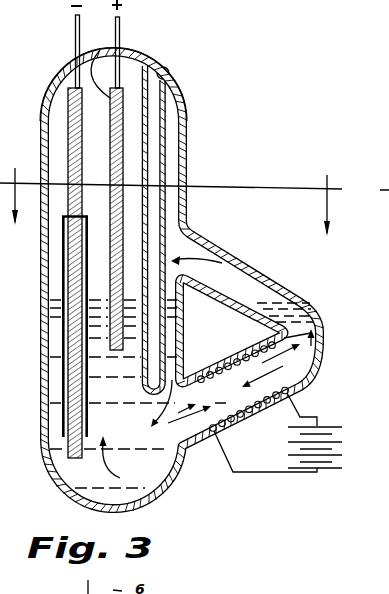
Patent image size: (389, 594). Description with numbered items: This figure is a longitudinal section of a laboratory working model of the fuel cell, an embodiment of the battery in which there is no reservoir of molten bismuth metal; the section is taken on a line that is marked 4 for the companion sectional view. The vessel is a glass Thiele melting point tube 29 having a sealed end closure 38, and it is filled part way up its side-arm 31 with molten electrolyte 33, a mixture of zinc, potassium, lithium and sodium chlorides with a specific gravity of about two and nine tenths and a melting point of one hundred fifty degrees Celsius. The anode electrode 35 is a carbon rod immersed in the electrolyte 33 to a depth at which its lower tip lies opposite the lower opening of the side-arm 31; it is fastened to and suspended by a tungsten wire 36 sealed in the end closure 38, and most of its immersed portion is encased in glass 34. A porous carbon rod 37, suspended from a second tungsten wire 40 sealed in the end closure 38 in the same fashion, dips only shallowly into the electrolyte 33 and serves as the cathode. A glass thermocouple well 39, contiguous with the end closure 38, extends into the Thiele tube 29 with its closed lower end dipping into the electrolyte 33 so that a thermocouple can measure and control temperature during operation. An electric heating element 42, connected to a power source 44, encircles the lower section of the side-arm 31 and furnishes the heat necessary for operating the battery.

The section line 4- 4 is at (194, 210).
The glass Thiele melting point tube 29 is at (177, 87).
The side-arm 31 is at (318, 304).
The molten electrolyte 33 is at (78, 497).
The glass encasement 34 is at (62, 283).
The anode electrode 35 is at (67, 131).
The tungsten wire 36 is at (75, 33).
The porous carbon rod 37 is at (104, 49).
The sealed end closure 38 is at (52, 86).
The glass thermocouple well 39 is at (164, 70).
The tungsten wire 40 is at (119, 32).
The electric heating element 42 is at (248, 412).
The power source 44 is at (307, 414).